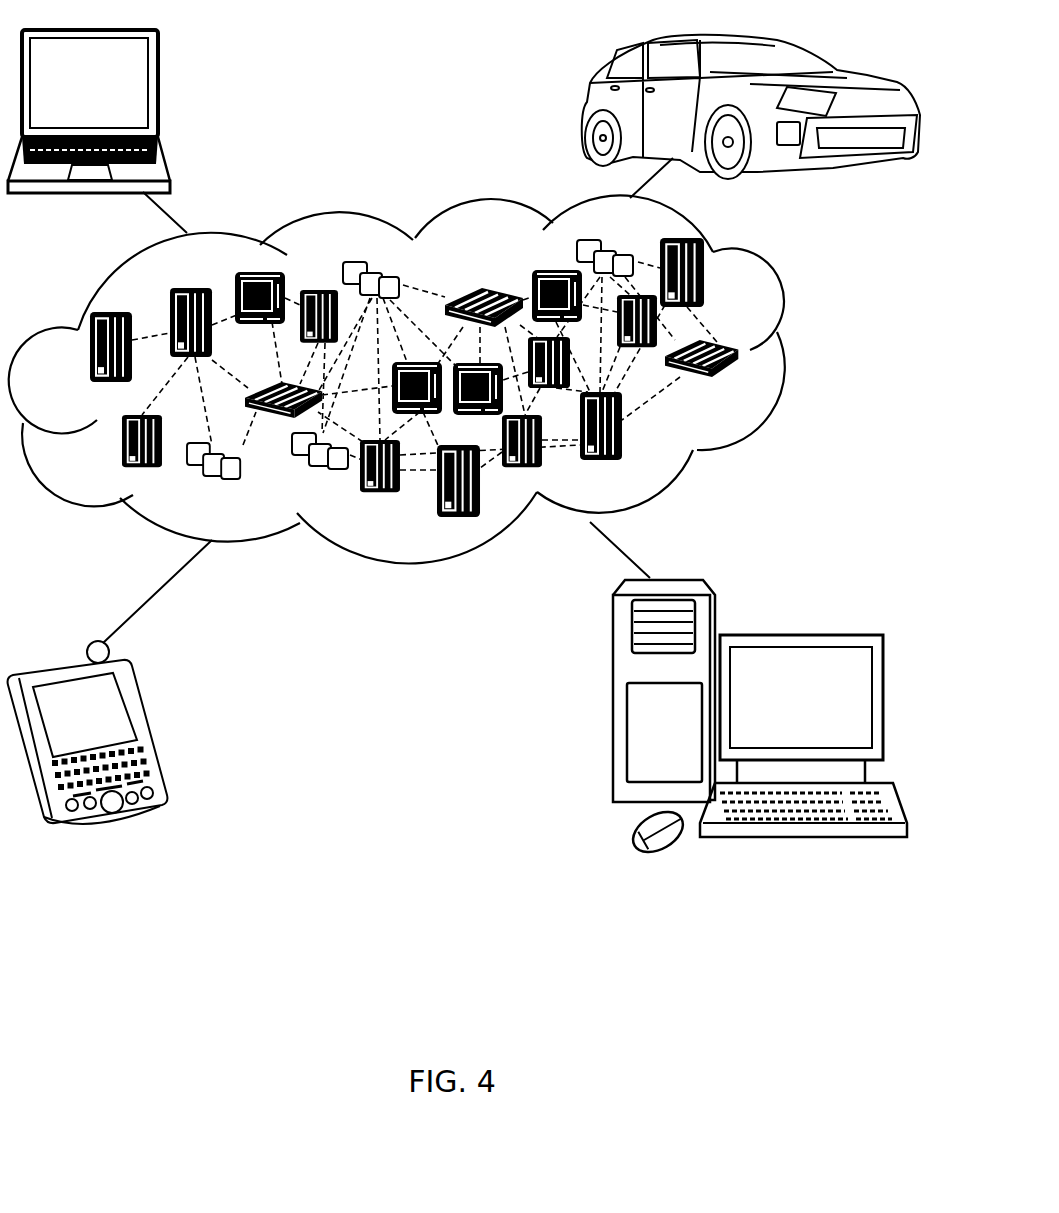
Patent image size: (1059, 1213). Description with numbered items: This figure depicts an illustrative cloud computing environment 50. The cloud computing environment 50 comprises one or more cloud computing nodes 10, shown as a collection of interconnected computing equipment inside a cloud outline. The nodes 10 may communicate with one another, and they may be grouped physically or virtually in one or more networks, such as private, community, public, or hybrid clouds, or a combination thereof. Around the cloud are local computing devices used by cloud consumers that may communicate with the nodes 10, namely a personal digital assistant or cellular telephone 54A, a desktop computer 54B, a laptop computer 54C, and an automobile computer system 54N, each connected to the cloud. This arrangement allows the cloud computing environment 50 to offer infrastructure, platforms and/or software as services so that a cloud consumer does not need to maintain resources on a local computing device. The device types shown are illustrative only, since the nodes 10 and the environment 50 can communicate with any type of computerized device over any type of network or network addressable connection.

The cloud computing nodes 10 is at (756, 389).
The cloud computing environment 50 is at (797, 357).
The personal digital assistant (PDA) or cellular telephone 54A is at (147, 728).
The desktop computer 54B is at (798, 635).
The laptop computer 54C is at (160, 92).
The automobile computer system 54N is at (585, 105).